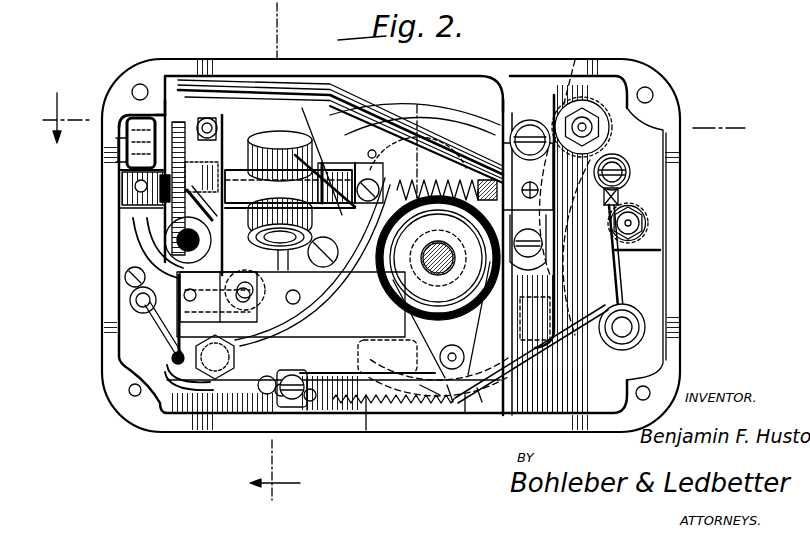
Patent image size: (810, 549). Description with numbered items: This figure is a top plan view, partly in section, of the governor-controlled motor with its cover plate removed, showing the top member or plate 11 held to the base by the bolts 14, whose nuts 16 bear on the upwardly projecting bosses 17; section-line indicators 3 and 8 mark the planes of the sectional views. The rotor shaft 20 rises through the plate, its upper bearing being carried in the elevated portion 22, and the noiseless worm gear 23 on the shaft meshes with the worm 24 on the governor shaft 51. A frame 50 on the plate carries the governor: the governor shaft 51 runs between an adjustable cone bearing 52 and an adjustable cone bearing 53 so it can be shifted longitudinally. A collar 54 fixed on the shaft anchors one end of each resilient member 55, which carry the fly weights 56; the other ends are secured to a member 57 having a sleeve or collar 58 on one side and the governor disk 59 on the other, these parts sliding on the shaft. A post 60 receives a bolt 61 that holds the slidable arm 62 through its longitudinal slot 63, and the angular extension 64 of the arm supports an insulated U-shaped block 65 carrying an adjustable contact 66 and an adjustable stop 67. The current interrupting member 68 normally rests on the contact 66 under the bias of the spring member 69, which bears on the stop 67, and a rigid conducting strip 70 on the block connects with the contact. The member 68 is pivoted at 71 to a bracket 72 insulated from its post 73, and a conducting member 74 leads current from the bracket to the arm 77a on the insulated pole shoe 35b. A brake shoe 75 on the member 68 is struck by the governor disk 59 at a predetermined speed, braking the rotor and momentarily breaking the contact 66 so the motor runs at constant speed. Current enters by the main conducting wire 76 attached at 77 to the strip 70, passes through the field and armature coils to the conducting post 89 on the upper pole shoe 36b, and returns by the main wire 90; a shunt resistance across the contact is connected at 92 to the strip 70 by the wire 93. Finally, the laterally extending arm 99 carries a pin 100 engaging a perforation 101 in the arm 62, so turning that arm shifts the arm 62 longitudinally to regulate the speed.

The section line 3- 3 is at (397, 118).
The section line 8- 8 is at (275, 264).
The top member or plate 11 is at (657, 287).
The bolts 14 is at (583, 127).
The nuts 16 is at (633, 85).
The bosses 17 is at (607, 113).
The rotor shaft 20 is at (441, 251).
The elevated portion 22 is at (465, 397).
The noiseless worm gear 23 is at (517, 277).
The worm 24 is at (440, 183).
The pole shoe 35b is at (366, 432).
The upper pole shoe 36b is at (562, 76).
The frame 50 is at (390, 113).
The governor shaft 51 is at (317, 163).
The adjustable cone bearing 52 is at (498, 150).
The adjustable cone bearing 53 is at (117, 138).
The collar 54 is at (376, 155).
The resilient members 55 is at (342, 168).
The fly weights 56 is at (282, 140).
The member 57 is at (205, 185).
The sleeve or collar 58 is at (290, 189).
The governor disk 59 is at (123, 212).
The post 60 is at (127, 366).
The bolt 61 is at (210, 395).
The arm 62 is at (411, 356).
The longitudinal slot 63 is at (150, 395).
The angular extension 64 is at (117, 265).
The insulated U-shaped block 65 is at (120, 298).
The adjustable contact 66 is at (105, 305).
The adjustable stop 67 is at (272, 300).
The current interrupting member 68 is at (226, 131).
The spring member 69 is at (275, 253).
The rigid conducting strip 70 is at (153, 392).
The pivot 71 is at (208, 116).
The bracket 72 is at (165, 112).
The post 73 is at (104, 117).
The conducting member 74 is at (158, 170).
The brake shoe 75 is at (123, 233).
The main conducting wire 76 is at (450, 395).
The attachment point 77 is at (307, 402).
The arm 77a is at (193, 330).
The conducting post 89 is at (622, 165).
The main wire 90 is at (618, 282).
The connection point 92 is at (183, 345).
The wire 93 is at (117, 328).
The laterally extending arm 99 is at (441, 320).
The pin 100 is at (433, 388).
The perforation 101 is at (477, 392).